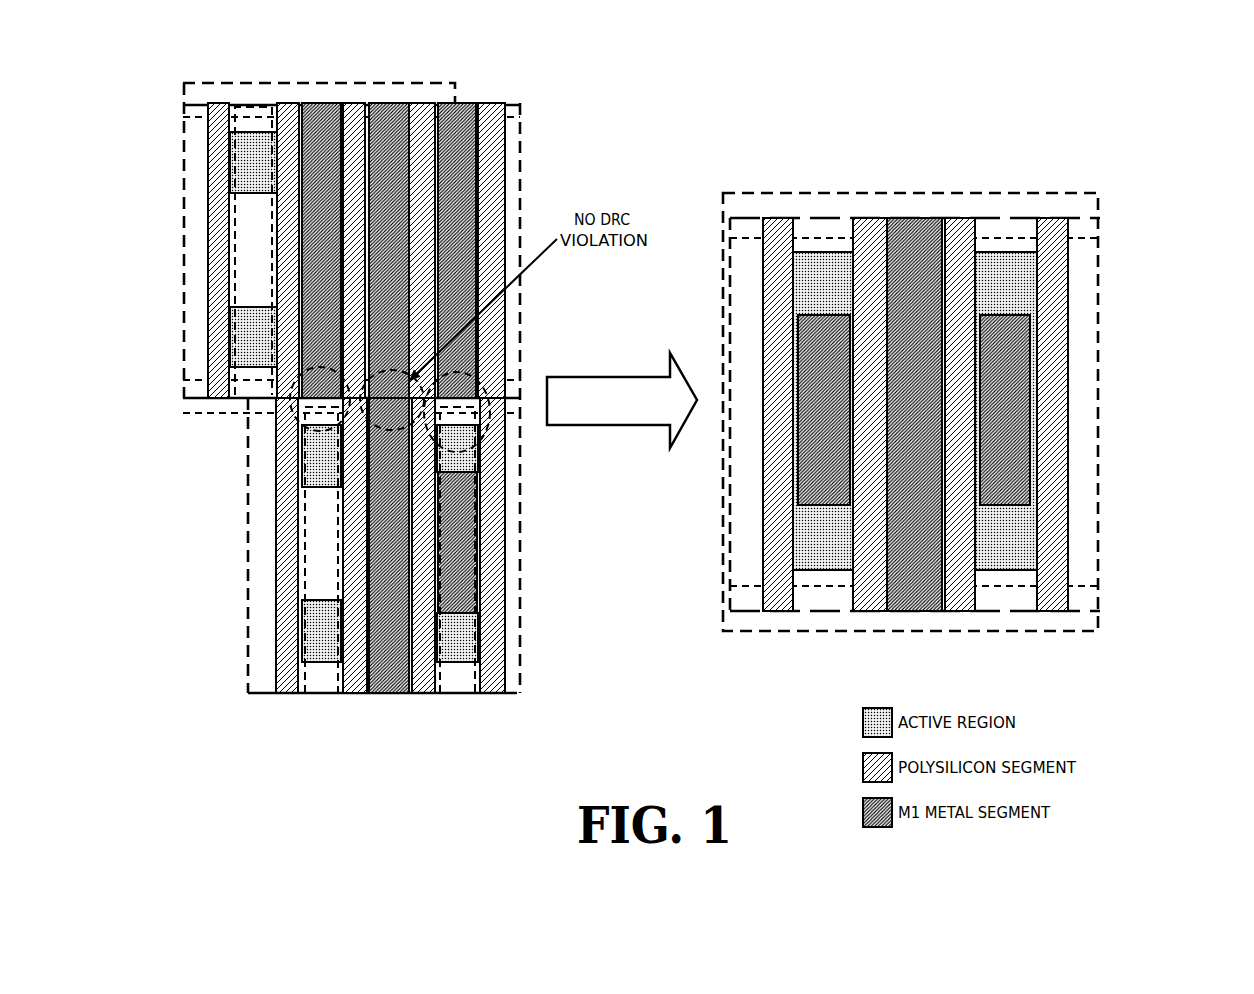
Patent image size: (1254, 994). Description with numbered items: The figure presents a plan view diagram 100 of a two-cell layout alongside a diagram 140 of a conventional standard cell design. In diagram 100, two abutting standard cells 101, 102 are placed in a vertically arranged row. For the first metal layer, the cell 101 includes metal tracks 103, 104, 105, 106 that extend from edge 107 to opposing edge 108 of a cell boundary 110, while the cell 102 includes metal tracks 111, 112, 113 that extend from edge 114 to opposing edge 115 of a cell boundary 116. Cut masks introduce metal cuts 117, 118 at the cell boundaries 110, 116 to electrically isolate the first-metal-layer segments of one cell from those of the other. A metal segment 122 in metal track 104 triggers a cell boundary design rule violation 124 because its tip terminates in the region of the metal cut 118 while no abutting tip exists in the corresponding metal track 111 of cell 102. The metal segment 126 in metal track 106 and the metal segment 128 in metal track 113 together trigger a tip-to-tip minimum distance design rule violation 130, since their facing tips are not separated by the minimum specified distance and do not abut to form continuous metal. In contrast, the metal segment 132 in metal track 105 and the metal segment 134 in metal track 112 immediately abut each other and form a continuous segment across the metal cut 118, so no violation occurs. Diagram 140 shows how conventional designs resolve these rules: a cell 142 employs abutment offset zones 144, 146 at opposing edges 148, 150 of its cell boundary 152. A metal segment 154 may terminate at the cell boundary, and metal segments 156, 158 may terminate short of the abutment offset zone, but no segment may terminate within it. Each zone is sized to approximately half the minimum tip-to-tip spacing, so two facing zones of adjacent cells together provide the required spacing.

The plan view diagram 100 is at (540, 74).
The standard cell 101 is at (526, 151).
The standard cell 102 is at (528, 470).
The metal track 103 is at (256, 100).
The metal track 104 is at (326, 100).
The metal track 105 is at (394, 100).
The metal track 106 is at (468, 100).
The edge 107 is at (505, 102).
The edge 108 is at (195, 401).
The cell boundary 110 is at (181, 239).
The metal track 111 is at (324, 699).
The metal track 112 is at (389, 699).
The metal track 113 is at (456, 699).
The edge 114 is at (520, 376).
The edge 115 is at (258, 695).
The cell boundary 116 is at (246, 615).
The metal cut 117 is at (198, 82).
The metal cut 118 is at (222, 415).
The metal segment 122 is at (292, 102).
The cell boundary design rule violation 124 is at (284, 420).
The metal segment 126 is at (432, 102).
The metal segment 128 is at (458, 620).
The tip-to-tip minimum distance design rule violation 130 is at (494, 466).
The metal segment 132 is at (362, 102).
The metal segment 134 is at (372, 696).
The diagram 140 is at (1114, 155).
The cell 142 is at (1110, 203).
The abutment offset zone 144 is at (1126, 316).
The abutment offset zone 146 is at (1126, 609).
The edge 148 is at (756, 216).
The edge 150 is at (753, 613).
The cell boundary 152 is at (728, 314).
The metal segment 154 is at (919, 613).
The metal segment 156 is at (820, 428).
The metal segment 158 is at (1010, 430).